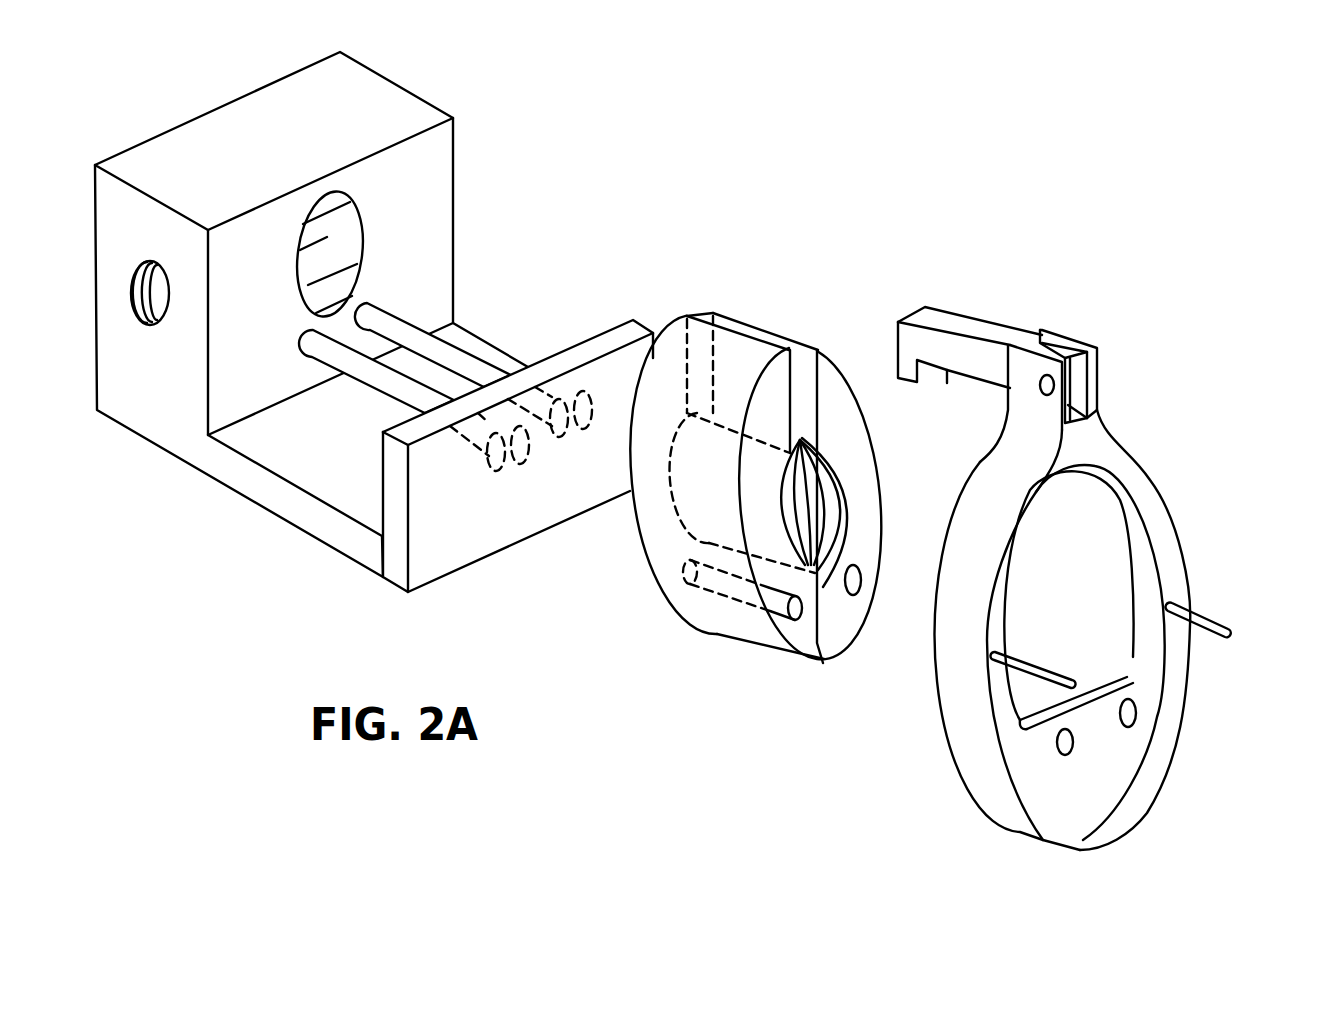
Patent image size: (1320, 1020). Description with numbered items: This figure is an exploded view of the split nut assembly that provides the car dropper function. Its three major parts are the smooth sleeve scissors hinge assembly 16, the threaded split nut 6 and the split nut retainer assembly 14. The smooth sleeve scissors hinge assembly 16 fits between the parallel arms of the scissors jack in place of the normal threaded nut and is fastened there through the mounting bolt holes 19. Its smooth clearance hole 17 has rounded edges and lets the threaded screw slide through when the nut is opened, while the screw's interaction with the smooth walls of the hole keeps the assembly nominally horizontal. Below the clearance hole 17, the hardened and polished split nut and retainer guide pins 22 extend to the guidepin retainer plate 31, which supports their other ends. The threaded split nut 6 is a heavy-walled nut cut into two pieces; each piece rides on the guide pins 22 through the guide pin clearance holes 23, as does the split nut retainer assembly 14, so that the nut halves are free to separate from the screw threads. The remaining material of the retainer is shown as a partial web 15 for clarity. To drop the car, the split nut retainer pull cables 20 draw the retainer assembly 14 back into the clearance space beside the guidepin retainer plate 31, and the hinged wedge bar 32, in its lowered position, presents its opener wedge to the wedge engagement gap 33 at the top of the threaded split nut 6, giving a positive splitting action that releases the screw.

The threaded split nut 6 is at (670, 513).
The split nut retainer assembly 14 is at (973, 715).
The partial web 15 is at (1117, 672).
The smooth sleeve scissors hinge assembly 16 is at (365, 64).
The smooth clearance hole 17 is at (363, 261).
The mounting bolt holes 19 is at (152, 262).
The split nut retainer pull cables 20 is at (1055, 684).
The split nut and retainer guide pins 22 is at (383, 375).
The guide pin clearance holes 23 is at (853, 596).
The guidepin retainer plate 31 is at (447, 533).
The wedge bar 32 is at (958, 317).
The wedge engagement gap 33 is at (712, 318).